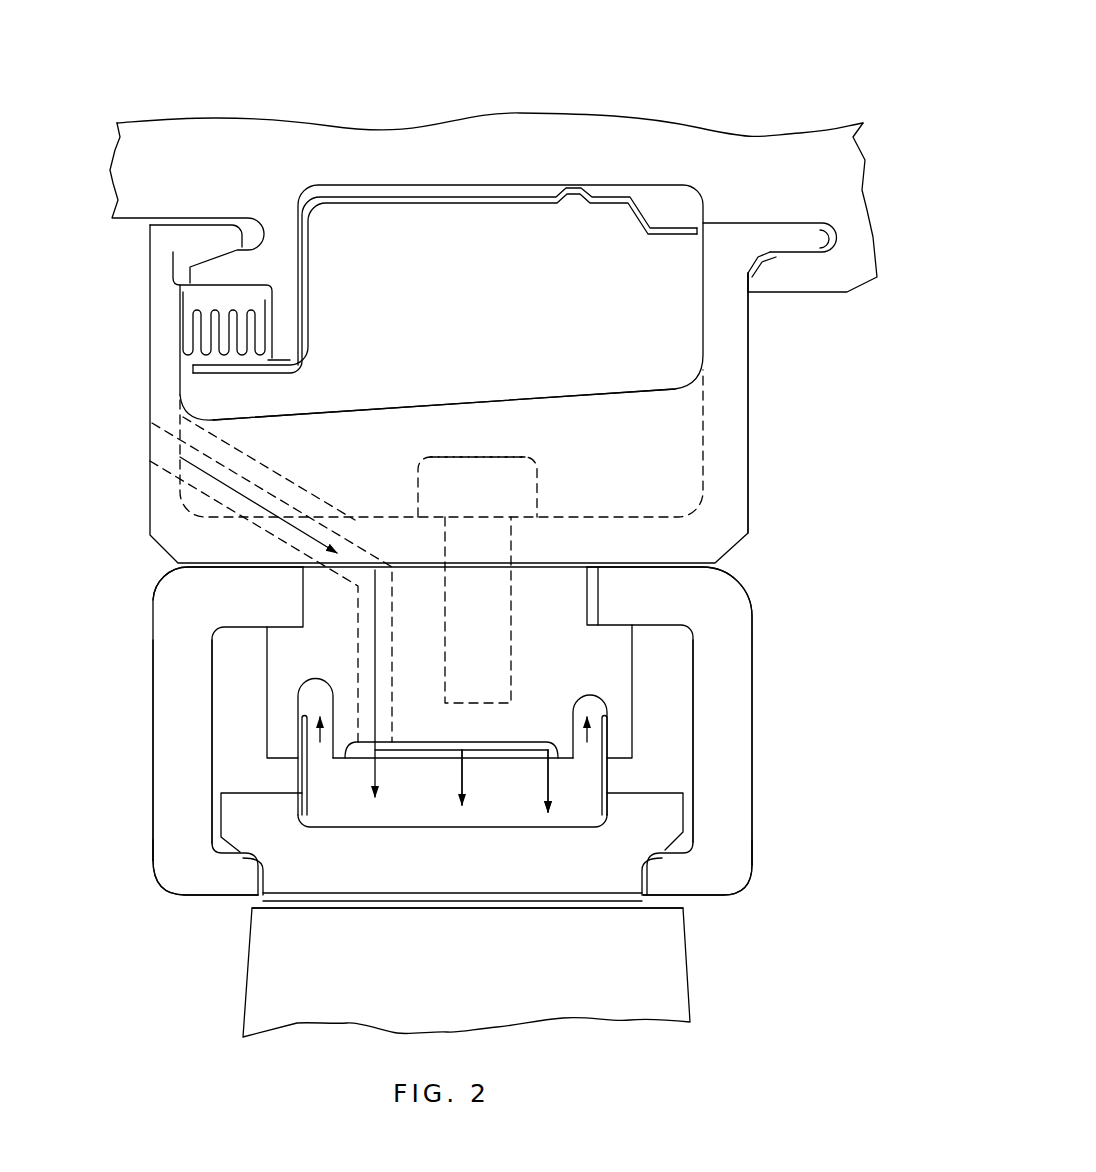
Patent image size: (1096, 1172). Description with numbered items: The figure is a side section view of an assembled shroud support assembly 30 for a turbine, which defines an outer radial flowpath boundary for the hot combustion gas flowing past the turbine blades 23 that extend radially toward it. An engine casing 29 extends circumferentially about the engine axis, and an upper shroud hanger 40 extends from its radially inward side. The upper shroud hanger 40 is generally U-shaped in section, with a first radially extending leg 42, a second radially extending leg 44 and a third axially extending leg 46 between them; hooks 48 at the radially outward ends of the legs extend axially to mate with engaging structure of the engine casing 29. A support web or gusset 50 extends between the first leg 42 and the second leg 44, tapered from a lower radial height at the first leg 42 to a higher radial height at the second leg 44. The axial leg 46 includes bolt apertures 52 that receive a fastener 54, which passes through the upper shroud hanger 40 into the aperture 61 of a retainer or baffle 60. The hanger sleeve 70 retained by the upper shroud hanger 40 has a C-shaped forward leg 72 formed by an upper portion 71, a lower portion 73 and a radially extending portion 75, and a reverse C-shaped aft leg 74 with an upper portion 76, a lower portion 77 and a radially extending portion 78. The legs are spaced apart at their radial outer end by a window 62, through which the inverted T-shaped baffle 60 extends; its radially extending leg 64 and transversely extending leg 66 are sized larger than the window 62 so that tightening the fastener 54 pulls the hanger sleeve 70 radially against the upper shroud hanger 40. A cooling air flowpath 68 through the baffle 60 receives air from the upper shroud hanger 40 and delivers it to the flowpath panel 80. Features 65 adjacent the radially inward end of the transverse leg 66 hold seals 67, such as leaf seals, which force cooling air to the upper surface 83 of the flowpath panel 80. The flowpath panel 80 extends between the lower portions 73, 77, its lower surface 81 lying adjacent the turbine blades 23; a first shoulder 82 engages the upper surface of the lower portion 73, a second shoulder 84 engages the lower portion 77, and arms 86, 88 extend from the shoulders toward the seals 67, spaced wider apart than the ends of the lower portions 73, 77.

The shroud support assembly 30 is at (718, 55).
The engine casing 29 is at (207, 158).
The hooks 48 is at (197, 238).
The first radially extending leg 42 is at (165, 342).
The second radially extending leg 44 is at (727, 390).
The upper shroud hanger 40 is at (505, 340).
The gusset 50 is at (463, 428).
The third axially extending leg 46 is at (590, 515).
The bolt apertures 52 is at (412, 512).
The fastener 54 is at (532, 493).
The aperture 61 is at (500, 612).
The hanger sleeve 70 is at (764, 652).
The forward leg 72 is at (155, 572).
The aft leg 74 is at (752, 580).
The upper portion 71 is at (246, 600).
The radially extending portion 75 is at (178, 740).
The radially extending leg 64 is at (545, 590).
The window 62 is at (598, 585).
The upper portion 76 is at (648, 620).
The radially extending portion 78 is at (732, 790).
The transversely extending leg 66 is at (603, 680).
The retainer or baffle 60 is at (640, 708).
The upper surface 83 is at (390, 826).
The cooling air flowpath 68 is at (377, 693).
The seal 67 is at (302, 772).
The feature 65 is at (320, 770).
The arm 86 is at (235, 815).
The arm 88 is at (660, 820).
The first shoulder 82 is at (243, 857).
The second shoulder 84 is at (660, 855).
The lower portion 73 is at (190, 878).
The lower portion 77 is at (697, 880).
The flowpath panel 80 is at (347, 880).
The lower surface 81 is at (392, 893).
The turbine blades 23 is at (501, 998).